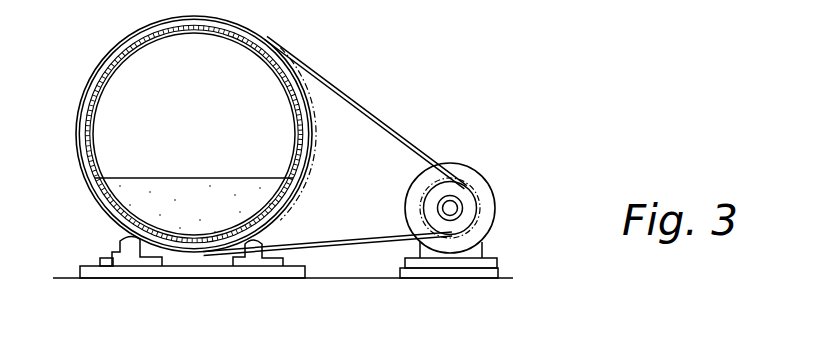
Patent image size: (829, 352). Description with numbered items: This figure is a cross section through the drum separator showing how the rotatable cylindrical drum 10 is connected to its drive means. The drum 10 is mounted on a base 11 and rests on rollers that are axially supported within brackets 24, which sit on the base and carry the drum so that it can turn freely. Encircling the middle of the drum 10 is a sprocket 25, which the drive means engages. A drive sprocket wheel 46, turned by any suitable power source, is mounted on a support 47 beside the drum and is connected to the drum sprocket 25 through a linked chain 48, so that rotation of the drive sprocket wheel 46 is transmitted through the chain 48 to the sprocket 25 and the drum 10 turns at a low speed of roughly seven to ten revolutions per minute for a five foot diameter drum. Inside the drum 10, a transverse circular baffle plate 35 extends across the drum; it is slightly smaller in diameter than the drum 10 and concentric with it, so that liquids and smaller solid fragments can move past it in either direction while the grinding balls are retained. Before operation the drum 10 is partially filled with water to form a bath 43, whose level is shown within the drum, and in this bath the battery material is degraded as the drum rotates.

The cylindrical drum 10 is at (200, 134).
The base 11 is at (210, 273).
The brackets 24 is at (112, 250).
The sprocket 25 is at (314, 150).
The baffle plate 35 is at (241, 102).
The bath 43 is at (172, 187).
The drive sprocket wheel 46 is at (468, 203).
The support 47 is at (488, 273).
The linked chain 48 is at (371, 121).